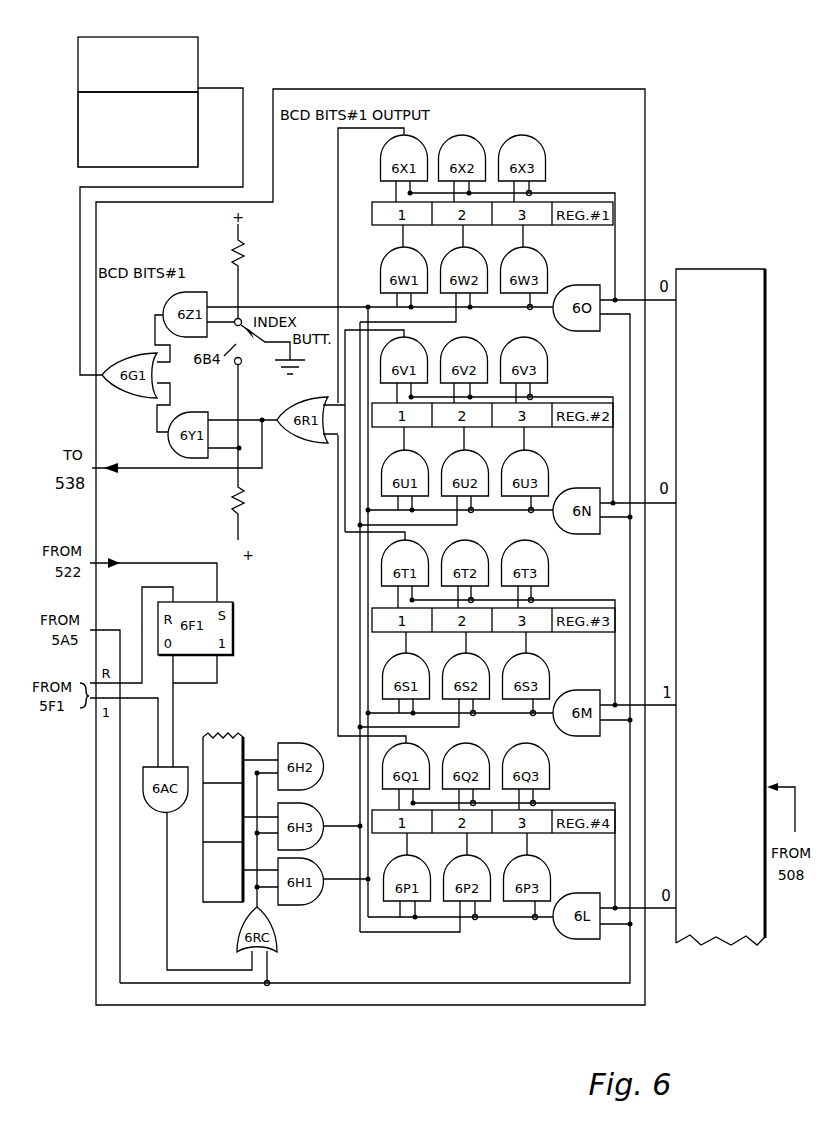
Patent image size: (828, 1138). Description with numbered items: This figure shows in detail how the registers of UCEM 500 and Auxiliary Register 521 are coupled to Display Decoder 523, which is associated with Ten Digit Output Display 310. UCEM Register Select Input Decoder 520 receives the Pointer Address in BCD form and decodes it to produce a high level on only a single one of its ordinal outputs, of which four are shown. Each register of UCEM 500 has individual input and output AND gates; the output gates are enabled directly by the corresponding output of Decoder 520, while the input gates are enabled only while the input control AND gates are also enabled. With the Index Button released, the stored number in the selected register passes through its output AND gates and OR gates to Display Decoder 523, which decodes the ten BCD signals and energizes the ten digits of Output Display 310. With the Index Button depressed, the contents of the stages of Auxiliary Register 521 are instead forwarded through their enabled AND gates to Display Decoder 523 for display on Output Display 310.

The UCEM 500 is at (509, 76).
The Display Decoder 523 is at (150, 37).
The 10 Digit Output Display 310 is at (198, 124).
The UCEM Register Select Input Decoder 520 is at (705, 268).
The Auxiliary Register 521 is at (248, 797).